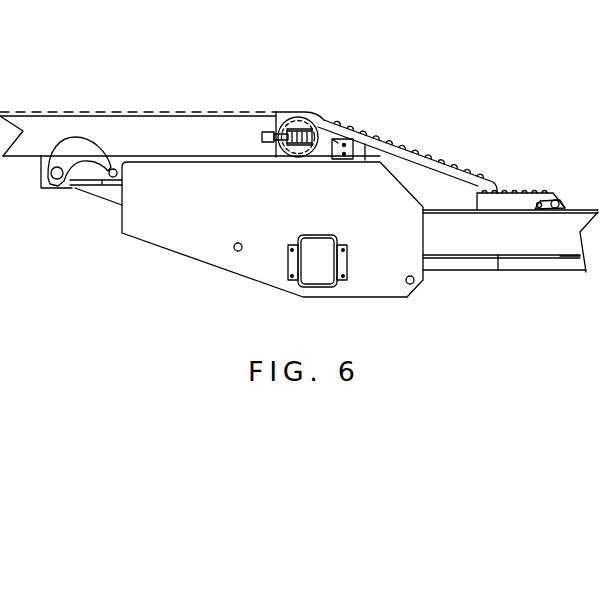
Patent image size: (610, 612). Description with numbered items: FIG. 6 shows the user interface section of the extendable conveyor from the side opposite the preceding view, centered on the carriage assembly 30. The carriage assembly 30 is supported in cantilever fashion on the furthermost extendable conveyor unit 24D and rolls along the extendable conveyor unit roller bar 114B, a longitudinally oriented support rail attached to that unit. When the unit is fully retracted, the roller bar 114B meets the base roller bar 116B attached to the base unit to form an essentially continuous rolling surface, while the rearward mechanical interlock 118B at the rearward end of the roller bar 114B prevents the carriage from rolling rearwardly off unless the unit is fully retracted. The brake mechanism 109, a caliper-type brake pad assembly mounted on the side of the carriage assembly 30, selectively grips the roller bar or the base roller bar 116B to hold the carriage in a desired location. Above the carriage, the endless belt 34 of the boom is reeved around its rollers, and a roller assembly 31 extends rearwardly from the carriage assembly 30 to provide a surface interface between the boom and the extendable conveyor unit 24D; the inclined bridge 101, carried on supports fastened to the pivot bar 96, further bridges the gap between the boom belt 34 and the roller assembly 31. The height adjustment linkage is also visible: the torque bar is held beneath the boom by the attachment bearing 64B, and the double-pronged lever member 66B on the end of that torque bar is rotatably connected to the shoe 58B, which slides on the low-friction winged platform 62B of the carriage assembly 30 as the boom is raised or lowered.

The carriage assembly 30 is at (200, 238).
The roller assembly 31 is at (443, 187).
The endless belt 34 is at (280, 112).
The inclined bridge 101 is at (353, 135).
The pivot bar 96 is at (325, 161).
The brake mechanism 109 is at (322, 255).
The extendable conveyor unit 24D is at (578, 212).
The extendable conveyor unit roller bar 114B is at (463, 266).
The rearward mechanical interlock 118B is at (505, 266).
The base roller bar 116B is at (572, 266).
The double-pronged lever member 66B is at (70, 152).
The attachment bearing 64B is at (43, 157).
The winged platform 62B is at (85, 190).
The shoe 58B is at (99, 188).